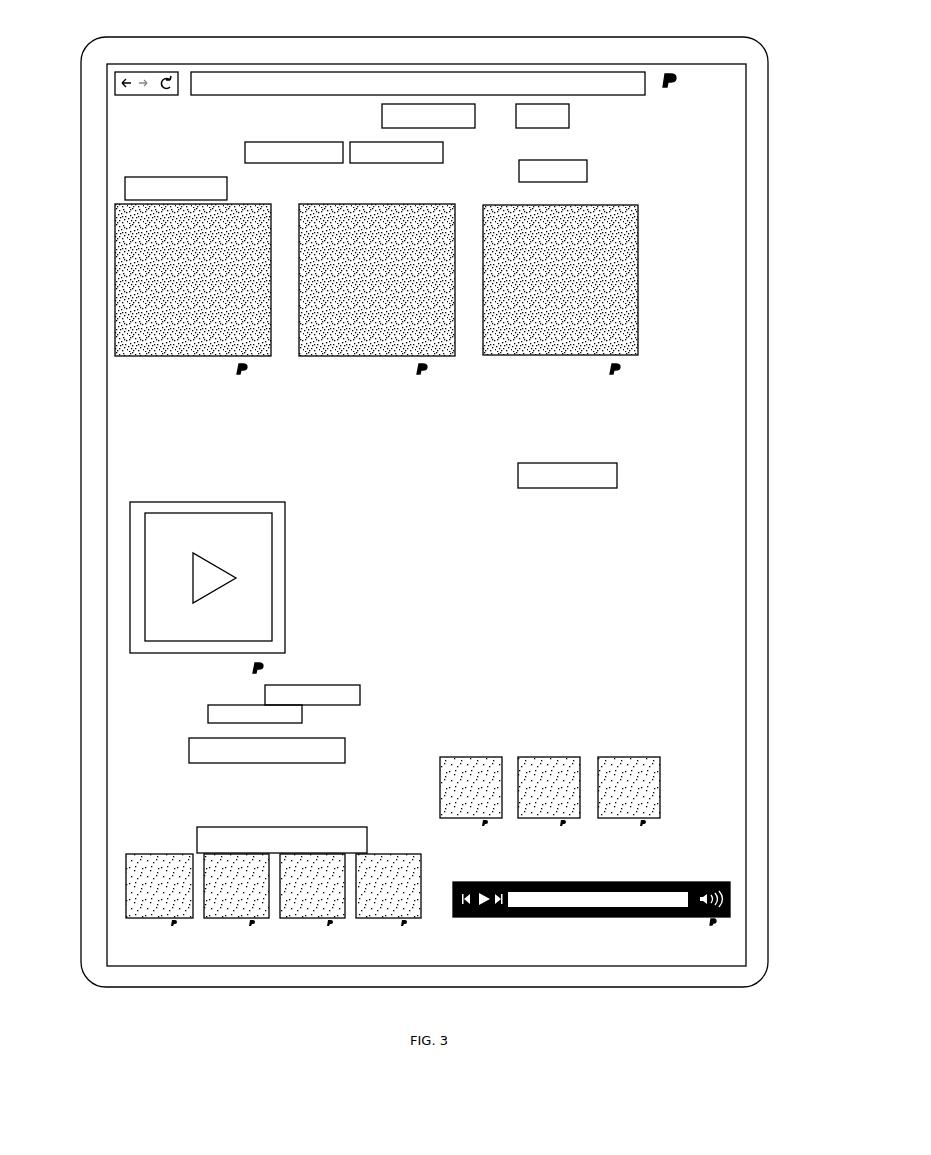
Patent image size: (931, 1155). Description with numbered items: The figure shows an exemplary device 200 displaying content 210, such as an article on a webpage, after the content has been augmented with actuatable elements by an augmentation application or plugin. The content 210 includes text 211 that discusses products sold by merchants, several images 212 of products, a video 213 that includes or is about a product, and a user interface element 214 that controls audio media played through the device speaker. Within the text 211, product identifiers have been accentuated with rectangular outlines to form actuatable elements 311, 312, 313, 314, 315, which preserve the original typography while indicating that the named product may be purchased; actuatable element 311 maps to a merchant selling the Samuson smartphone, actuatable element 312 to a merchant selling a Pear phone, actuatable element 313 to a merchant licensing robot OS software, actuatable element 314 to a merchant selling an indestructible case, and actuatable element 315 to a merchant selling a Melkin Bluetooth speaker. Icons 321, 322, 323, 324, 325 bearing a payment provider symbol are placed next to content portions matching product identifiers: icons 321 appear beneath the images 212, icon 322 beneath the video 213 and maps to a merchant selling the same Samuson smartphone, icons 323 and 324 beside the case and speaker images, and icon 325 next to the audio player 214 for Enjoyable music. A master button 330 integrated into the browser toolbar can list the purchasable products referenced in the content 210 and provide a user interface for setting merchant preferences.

The device 200 is at (776, 68).
The content 210 is at (715, 96).
The text 211 is at (112, 117).
The images 212 is at (218, 360).
The video 213 is at (287, 584).
The user interface element 214 is at (608, 924).
The actuatable element 311 is at (475, 127).
The actuatable element 312 is at (569, 127).
The actuatable element 313 is at (587, 182).
The actuatable element 314 is at (345, 760).
The actuatable element 315 is at (320, 826).
The icon 321 is at (285, 372).
The icon 322 is at (306, 663).
The icon 323 is at (500, 822).
The icon 324 is at (190, 924).
The icon 325 is at (726, 926).
The master button 330 is at (704, 88).